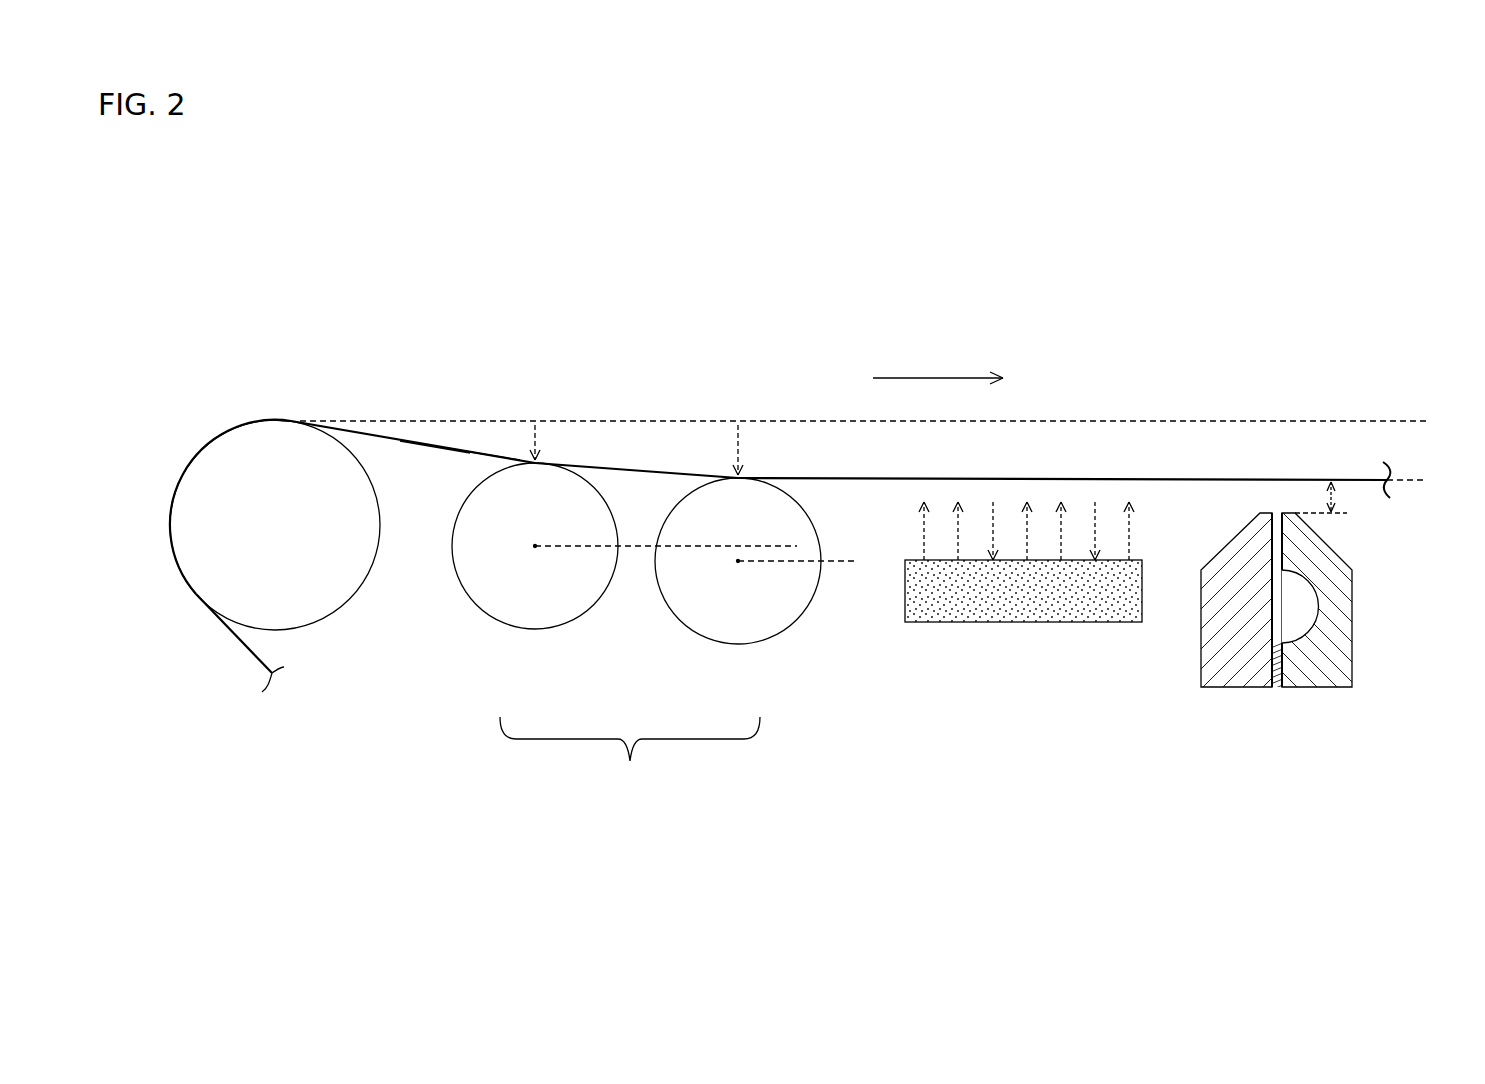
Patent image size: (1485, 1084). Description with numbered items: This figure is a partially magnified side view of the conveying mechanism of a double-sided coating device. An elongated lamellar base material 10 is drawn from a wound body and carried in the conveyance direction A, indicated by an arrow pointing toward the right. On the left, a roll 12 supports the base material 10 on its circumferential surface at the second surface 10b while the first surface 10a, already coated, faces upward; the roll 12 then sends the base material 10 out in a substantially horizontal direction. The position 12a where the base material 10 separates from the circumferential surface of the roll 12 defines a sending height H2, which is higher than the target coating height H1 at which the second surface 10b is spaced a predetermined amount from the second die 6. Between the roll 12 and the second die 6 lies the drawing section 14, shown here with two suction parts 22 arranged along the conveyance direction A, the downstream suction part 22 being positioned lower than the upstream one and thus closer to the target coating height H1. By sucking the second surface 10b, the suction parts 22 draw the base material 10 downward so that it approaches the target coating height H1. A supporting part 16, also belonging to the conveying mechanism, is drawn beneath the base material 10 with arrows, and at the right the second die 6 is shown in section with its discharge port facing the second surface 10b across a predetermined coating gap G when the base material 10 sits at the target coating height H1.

The second die 6 is at (1315, 687).
The base material 10 is at (412, 437).
The first surface 10a is at (478, 452).
The second surface 10b is at (427, 446).
The roll 12 is at (322, 624).
The position where the base material separates from the circumferential surface 12a is at (301, 418).
The drawing section 14 is at (630, 754).
The supporting part 16 is at (1030, 622).
The suction part 22 is at (535, 629).
The coating gap G is at (1337, 500).
The target coating height H1 is at (1424, 480).
The sending height H2 is at (883, 422).
The conveyance direction A is at (938, 363).